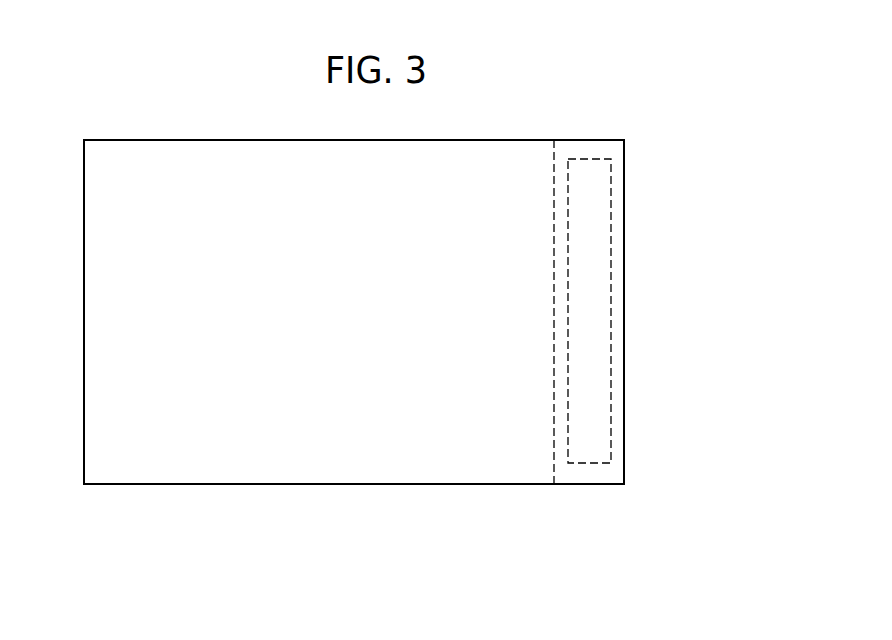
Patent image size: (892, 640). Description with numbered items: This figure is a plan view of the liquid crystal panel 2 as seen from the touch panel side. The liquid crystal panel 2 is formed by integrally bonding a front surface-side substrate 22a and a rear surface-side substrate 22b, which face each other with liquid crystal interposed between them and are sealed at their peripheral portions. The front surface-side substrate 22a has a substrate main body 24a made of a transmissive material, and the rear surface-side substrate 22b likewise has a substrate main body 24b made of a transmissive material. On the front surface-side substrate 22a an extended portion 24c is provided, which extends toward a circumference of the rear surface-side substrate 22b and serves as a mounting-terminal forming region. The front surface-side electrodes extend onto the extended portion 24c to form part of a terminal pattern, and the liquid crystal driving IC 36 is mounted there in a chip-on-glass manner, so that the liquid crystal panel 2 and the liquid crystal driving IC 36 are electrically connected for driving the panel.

The liquid crystal panel 2 is at (640, 106).
The front surface-side substrate 22a is at (408, 489).
The substrate main body 24a is at (483, 473).
The substrate main body 24b is at (553, 166).
The rear surface-side substrate 22b is at (568, 474).
The extended portion 24c is at (613, 476).
The liquid crystal driving IC 36 is at (598, 358).